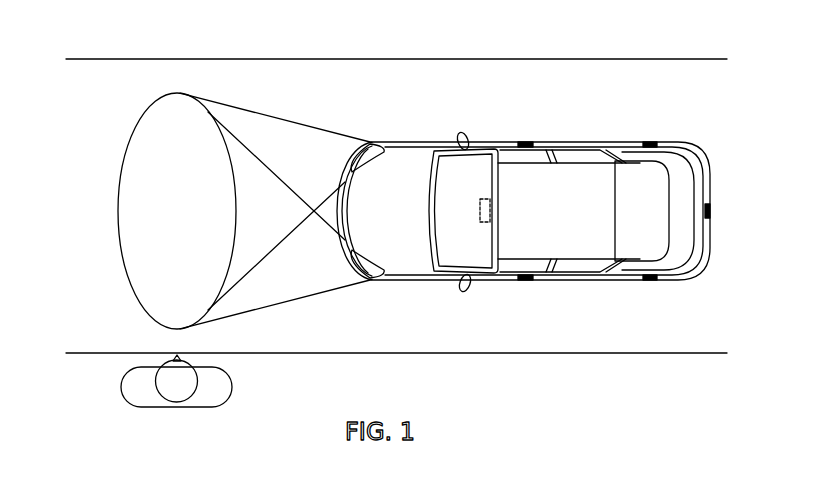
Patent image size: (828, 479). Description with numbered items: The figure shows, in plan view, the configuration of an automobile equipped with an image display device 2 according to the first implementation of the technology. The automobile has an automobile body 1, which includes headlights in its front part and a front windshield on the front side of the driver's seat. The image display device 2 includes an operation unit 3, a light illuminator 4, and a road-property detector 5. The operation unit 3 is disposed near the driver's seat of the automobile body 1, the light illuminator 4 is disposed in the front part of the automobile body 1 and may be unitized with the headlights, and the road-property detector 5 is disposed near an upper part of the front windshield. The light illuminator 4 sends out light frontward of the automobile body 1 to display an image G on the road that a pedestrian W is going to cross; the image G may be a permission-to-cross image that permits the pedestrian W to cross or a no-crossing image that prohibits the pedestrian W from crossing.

The automobile body 1 is at (583, 268).
The image display device 2 is at (411, 70).
The operation unit 3 is at (456, 172).
The light illuminator 4 is at (376, 150).
The road-property detector 5 is at (482, 206).
The image G is at (160, 95).
The pedestrian W is at (231, 385).